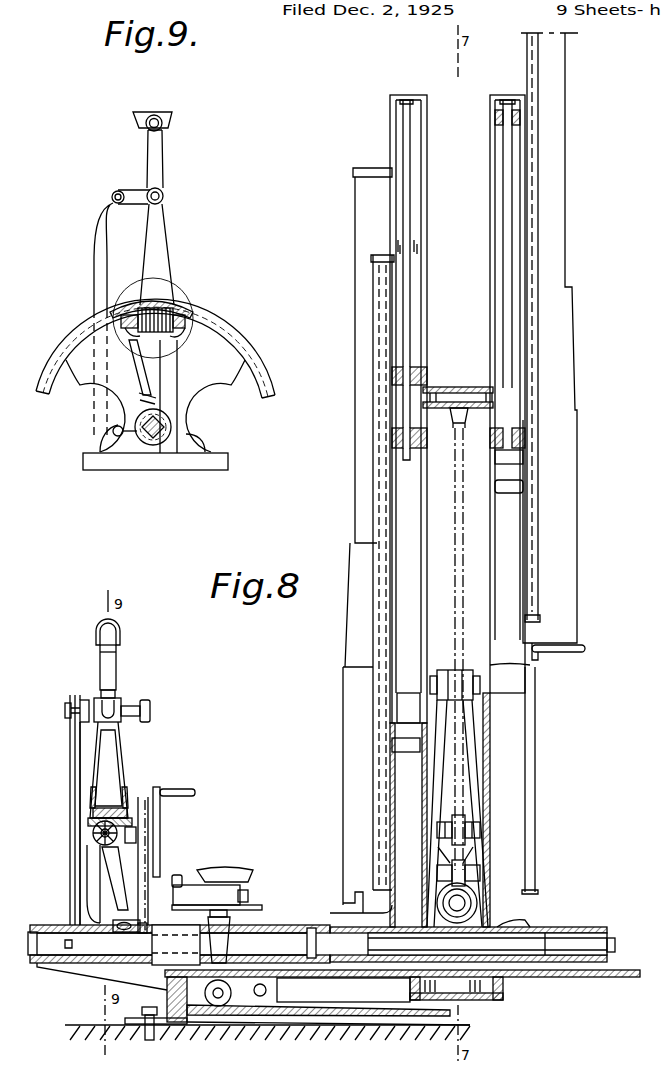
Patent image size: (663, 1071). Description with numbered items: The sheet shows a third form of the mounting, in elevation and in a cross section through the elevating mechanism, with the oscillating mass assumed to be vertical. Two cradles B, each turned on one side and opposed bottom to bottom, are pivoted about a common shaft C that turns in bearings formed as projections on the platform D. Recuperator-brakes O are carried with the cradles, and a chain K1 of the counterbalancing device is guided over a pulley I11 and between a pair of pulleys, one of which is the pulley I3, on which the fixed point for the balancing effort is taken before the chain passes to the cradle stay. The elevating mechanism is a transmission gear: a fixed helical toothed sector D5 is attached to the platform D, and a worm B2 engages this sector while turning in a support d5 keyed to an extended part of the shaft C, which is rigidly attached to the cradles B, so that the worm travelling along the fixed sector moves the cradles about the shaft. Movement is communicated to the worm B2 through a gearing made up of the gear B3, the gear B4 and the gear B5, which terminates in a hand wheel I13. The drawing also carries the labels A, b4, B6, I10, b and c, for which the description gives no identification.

In FIG. 8, the cylinder casing A is at (355, 515).
In FIG. 8, the recuperator-brakes O is at (418, 160).
In FIG. 8, the cross-head plate b4 is at (438, 388).
In FIG. 8, the gear of the gearing B3—B4—B5 B4 is at (463, 387).
In FIG. 8, the chain K1 is at (478, 555).
In FIG. 8, the pulley I3 is at (477, 690).
In FIG. 8, the cradles B is at (405, 803).
In FIG. 8, the pulley I11 is at (463, 828).
In FIG. 8, the pin with roller I10 is at (470, 873).
In FIG. 8, the bearing bracket b is at (398, 927).
In FIG. 8, the shaft c is at (530, 942).
In FIG. 8, the platform D is at (290, 970).
In FIG. 9, the worm B2 is at (185, 305).
In FIG. 8, the worm B2 is at (128, 818).
In FIG. 9, the gear of the gearing B3—B4—B5 B3 is at (133, 322).
In FIG. 8, the gear of the gearing B3—B4—B5 B3 is at (93, 836).
In FIG. 9, the link B6 is at (155, 375).
In FIG. 8, the link B6 is at (113, 870).
In FIG. 9, the support d5 is at (167, 382).
In FIG. 8, the support d5 is at (100, 900).
In FIG. 9, the gear of the gearing B3—B4— B5 is at (166, 412).
In FIG. 8, the gear of the gearing B3—B4— B5 is at (117, 938).
In FIG. 9, the fixed helical toothed sector D5 is at (155, 384).
In FIG. 8, the fixed helical toothed sector D5 is at (88, 819).
In FIG. 8, the hand wheel I13 is at (195, 792).
In FIG. 9, the common shaft C is at (153, 440).